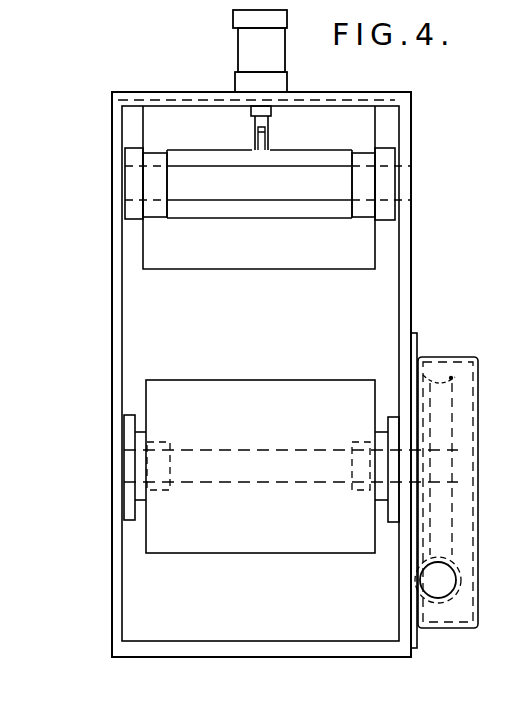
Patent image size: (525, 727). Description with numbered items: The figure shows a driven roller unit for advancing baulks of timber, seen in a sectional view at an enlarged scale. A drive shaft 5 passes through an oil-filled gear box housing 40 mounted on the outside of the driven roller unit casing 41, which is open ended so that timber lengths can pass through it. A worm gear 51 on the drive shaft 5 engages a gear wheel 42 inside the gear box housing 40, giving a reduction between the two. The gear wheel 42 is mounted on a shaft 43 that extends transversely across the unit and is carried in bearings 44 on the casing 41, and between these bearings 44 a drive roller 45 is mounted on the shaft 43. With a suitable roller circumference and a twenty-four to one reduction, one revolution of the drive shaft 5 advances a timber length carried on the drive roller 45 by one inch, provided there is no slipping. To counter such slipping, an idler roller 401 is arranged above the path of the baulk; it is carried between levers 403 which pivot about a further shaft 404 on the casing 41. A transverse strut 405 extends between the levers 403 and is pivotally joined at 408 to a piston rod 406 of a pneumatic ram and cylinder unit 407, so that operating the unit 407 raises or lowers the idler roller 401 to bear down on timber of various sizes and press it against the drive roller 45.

The drive shaft 5 is at (455, 585).
The gear box housing 40 is at (478, 400).
The driven roller unit casing 41 is at (405, 265).
The gear wheel 42 is at (446, 364).
The shaft 43 is at (443, 472).
The bearings 44 is at (127, 434).
The drive roller 45 is at (153, 398).
The worm gear 51 is at (458, 556).
The idler roller 401 is at (358, 242).
The levers 403 is at (393, 160).
The further shaft 404 is at (340, 190).
The transverse strut 405 is at (335, 157).
The piston rod 406 is at (260, 109).
The pneumatic ram and cylinder unit 407 is at (245, 50).
The pivotal joint 408 is at (270, 133).